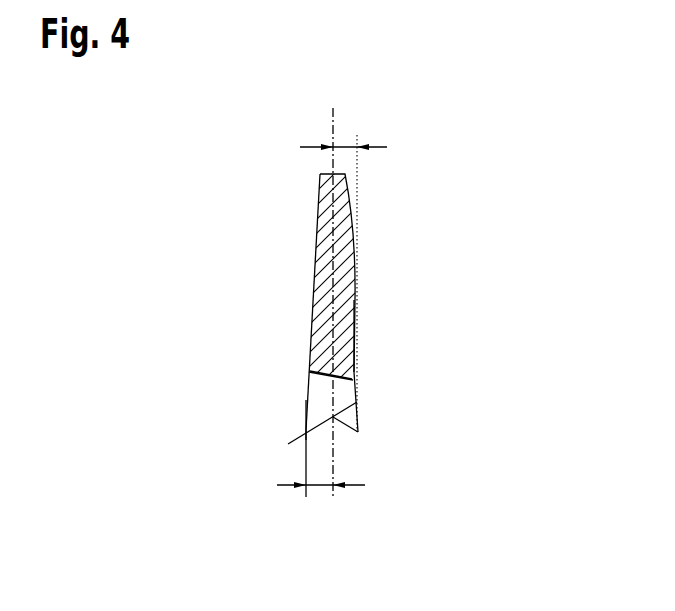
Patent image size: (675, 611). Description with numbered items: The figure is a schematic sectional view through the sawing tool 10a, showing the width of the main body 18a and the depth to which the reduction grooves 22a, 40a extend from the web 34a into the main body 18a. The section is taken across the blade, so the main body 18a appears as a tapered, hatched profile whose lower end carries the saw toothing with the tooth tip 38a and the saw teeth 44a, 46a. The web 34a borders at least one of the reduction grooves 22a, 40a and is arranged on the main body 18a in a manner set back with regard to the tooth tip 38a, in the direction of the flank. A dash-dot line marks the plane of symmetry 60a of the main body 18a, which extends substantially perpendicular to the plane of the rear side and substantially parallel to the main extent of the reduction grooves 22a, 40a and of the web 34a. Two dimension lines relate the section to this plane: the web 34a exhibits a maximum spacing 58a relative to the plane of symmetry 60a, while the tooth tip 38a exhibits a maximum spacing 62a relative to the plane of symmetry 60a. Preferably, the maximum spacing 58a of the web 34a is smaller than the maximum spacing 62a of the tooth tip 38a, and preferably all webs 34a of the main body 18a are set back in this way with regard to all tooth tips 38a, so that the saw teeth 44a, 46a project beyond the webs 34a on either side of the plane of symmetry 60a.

The sawing tool 10a is at (510, 154).
The main body 18a is at (292, 227).
The reduction groove 22a is at (354, 352).
The reduction groove 40a is at (331, 375).
The web 34a is at (357, 325).
The tooth tip 38a is at (301, 437).
The saw tooth 44a is at (303, 413).
The saw tooth 46a is at (358, 414).
The maximum spacing of the web 58a is at (343, 142).
The plane of symmetry 60a is at (333, 114).
The maximum spacing of the tooth tip 62a is at (318, 488).